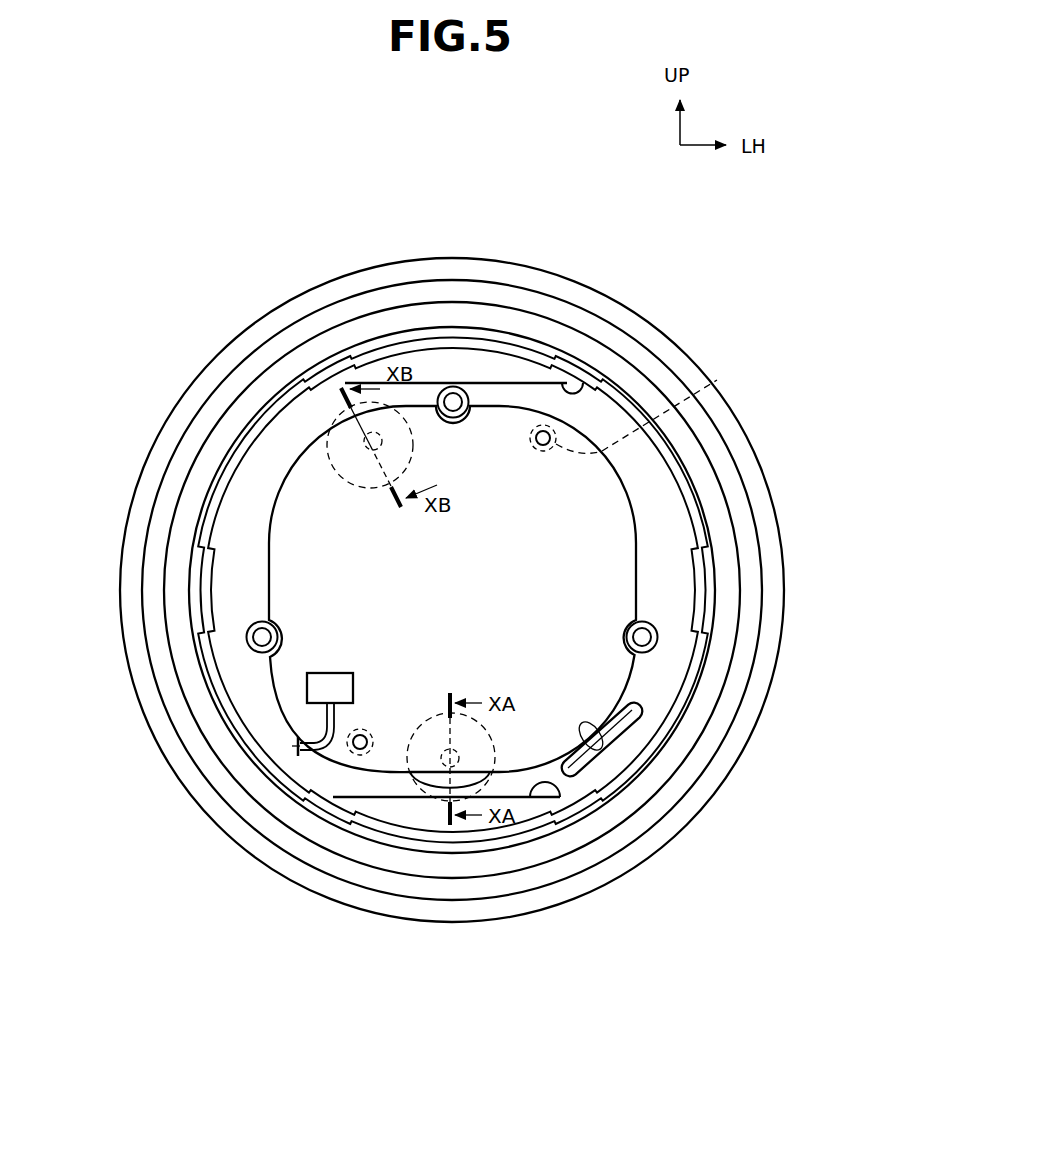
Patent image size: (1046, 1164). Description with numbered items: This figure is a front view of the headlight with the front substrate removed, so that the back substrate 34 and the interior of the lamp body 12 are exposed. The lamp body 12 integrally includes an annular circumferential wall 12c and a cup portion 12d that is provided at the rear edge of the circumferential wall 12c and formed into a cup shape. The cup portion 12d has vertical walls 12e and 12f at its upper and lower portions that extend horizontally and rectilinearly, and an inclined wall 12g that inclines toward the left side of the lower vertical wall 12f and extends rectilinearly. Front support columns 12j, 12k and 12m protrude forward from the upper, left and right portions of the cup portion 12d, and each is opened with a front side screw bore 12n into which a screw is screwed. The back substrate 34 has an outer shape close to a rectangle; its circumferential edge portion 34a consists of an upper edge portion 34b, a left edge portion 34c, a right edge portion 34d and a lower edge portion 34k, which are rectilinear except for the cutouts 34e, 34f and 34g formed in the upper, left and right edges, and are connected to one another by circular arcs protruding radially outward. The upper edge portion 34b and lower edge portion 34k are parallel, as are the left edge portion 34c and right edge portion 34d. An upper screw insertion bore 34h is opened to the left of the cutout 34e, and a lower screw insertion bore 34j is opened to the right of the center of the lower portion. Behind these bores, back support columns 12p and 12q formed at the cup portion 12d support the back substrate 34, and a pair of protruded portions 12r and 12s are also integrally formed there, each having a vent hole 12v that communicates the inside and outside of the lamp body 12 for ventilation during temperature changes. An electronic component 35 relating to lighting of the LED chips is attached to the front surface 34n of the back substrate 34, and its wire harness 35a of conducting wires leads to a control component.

The lamp body 12 is at (258, 406).
The circumferential wall 12c is at (252, 447).
The cup portion 12d is at (308, 517).
The vertical wall 12e is at (580, 393).
The vertical wall 12f is at (550, 806).
The inclined wall 12g is at (600, 683).
The front support column 12j is at (483, 393).
The front support column 12k is at (655, 627).
The front support column 12m is at (250, 630).
The front side screw bore 12n is at (455, 386).
The back support column 12p is at (558, 440).
The back support column 12q is at (357, 752).
The protruded portion 12r is at (366, 438).
The protruded portion 12s is at (445, 790).
The vent hole 12v is at (330, 425).
The back substrate 34 is at (242, 518).
The circumferential edge portion 34a is at (262, 555).
The upper edge portion 34b is at (508, 402).
The left edge portion 34c is at (640, 525).
The right edge portion 34d is at (203, 573).
The cutout 34e is at (449, 395).
The cutout 34f is at (652, 650).
The cutout 34g is at (258, 655).
The upper screw insertion bore 34h is at (603, 380).
The lower screw insertion bore 34j is at (340, 800).
The lower edge portion 34k is at (529, 800).
The front surface 34n is at (630, 716).
The electronic component 35 is at (307, 692).
The wire harness 35a is at (298, 752).